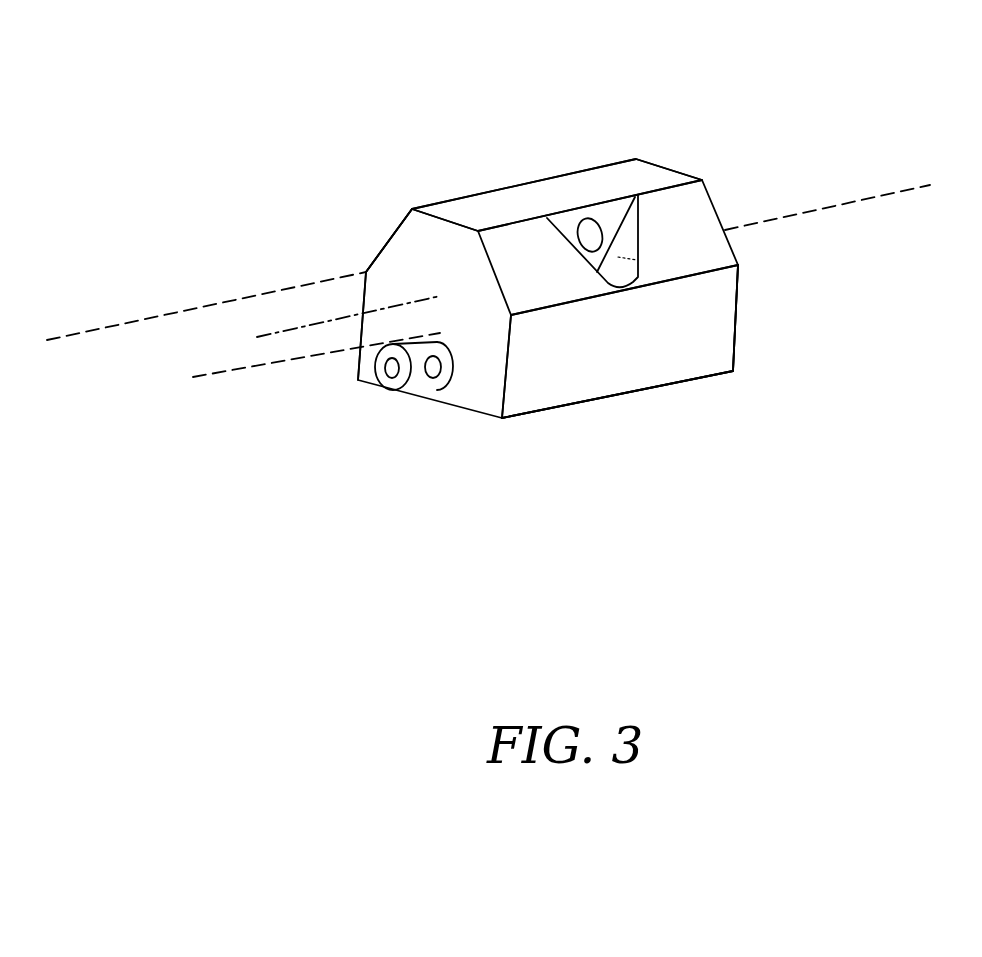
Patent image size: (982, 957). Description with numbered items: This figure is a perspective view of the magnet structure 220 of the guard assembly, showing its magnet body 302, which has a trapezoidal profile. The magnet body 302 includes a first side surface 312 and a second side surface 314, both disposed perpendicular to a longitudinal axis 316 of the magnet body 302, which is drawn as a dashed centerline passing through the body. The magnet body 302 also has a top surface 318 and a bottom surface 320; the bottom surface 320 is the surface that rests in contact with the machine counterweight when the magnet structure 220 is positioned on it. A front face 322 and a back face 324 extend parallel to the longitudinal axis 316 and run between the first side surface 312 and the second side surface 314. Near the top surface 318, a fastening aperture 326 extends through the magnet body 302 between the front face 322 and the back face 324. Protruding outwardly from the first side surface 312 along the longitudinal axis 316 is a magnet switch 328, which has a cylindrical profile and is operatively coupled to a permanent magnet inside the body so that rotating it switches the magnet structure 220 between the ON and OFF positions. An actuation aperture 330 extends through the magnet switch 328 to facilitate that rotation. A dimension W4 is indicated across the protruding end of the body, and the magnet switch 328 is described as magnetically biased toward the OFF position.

The magnet structure 220 is at (752, 140).
The magnet body 302 is at (742, 277).
The first side surface 312 is at (395, 278).
The second side surface 314 is at (735, 332).
The longitudinal axis 316 is at (897, 185).
The top surface 318 is at (543, 195).
The bottom surface 320 is at (570, 406).
The front face 322 is at (630, 360).
The back face 324 is at (393, 232).
The fastening aperture 326 is at (597, 224).
The magnet switch 328 is at (385, 393).
The actuation aperture 330 is at (440, 377).
The width dimension W4 is at (193, 377).